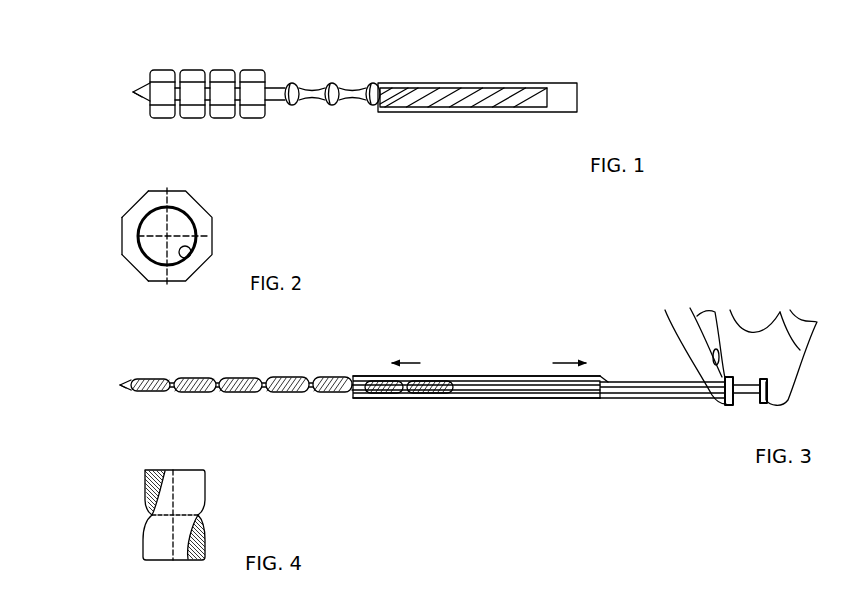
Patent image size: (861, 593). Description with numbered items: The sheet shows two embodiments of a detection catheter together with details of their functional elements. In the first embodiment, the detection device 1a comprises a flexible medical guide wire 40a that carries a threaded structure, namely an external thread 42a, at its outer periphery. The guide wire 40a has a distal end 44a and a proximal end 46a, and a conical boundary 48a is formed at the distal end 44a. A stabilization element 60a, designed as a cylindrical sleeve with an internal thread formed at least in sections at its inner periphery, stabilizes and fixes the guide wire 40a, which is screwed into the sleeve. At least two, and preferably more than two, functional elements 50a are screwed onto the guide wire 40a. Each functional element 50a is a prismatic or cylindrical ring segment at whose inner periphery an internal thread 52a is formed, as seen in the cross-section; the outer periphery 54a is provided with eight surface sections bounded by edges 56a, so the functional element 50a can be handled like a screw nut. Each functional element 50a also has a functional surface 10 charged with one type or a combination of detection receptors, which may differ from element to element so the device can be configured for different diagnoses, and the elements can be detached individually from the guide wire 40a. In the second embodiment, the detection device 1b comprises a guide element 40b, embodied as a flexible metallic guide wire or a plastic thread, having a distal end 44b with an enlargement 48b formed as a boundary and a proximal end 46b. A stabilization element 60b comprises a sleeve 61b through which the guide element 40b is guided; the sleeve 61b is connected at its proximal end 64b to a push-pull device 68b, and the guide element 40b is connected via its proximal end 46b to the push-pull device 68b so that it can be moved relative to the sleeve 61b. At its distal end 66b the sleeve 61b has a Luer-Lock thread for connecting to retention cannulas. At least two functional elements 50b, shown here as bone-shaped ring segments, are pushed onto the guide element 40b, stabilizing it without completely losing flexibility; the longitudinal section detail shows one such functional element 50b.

In FIG. 1, the detection device 1a is at (472, 55).
In FIG. 1, the distal end 44a is at (133, 90).
In FIG. 1, the conical boundary 48a is at (133, 96).
In FIG. 1, the functional element 50a is at (190, 70).
In FIG. 2, the functional element 50a is at (196, 206).
In FIG. 1, the guide wire 40a is at (311, 90).
In FIG. 1, the external thread 42a is at (292, 83).
In FIG. 1, the proximal end 46a is at (553, 90).
In FIG. 1, the internal thread 52a is at (503, 107).
In FIG. 2, the internal thread 52a is at (191, 259).
In FIG. 1, the stabilization element 60a is at (562, 112).
In FIG. 2, the edges 56a is at (147, 192).
In FIG. 2, the outer periphery 54a is at (122, 234).
In FIG. 2, the functional surface 10 is at (135, 266).
In FIG. 3, the detection device 1b is at (530, 352).
In FIG. 3, the distal end 44b is at (120, 383).
In FIG. 3, the enlargement 48b is at (120, 387).
In FIG. 3, the functional element 50b is at (178, 392).
In FIG. 4, the functional element 50b is at (143, 558).
In FIG. 3, the distal end 66b is at (355, 377).
In FIG. 3, the guide element 40b is at (478, 381).
In FIG. 3, the sleeve 61b is at (508, 399).
In FIG. 3, the stabilization element 60b is at (557, 414).
In FIG. 3, the proximal end 46b is at (601, 381).
In FIG. 3, the proximal end 64b is at (600, 399).
In FIG. 3, the push-pull device 68b is at (673, 398).